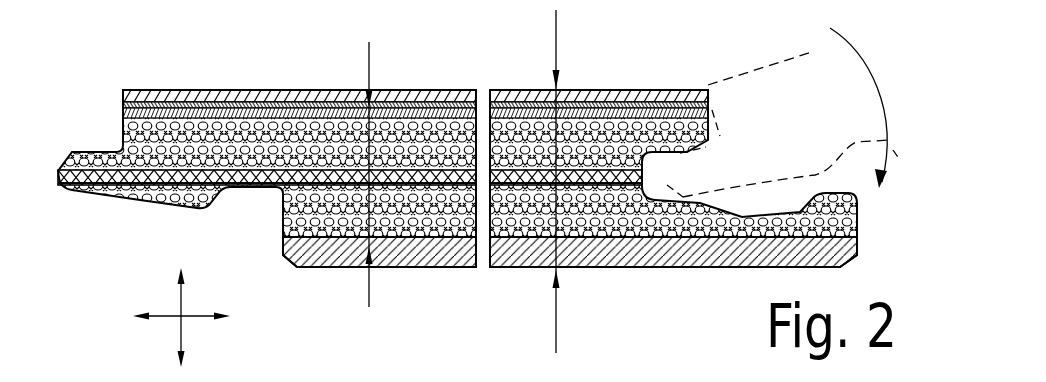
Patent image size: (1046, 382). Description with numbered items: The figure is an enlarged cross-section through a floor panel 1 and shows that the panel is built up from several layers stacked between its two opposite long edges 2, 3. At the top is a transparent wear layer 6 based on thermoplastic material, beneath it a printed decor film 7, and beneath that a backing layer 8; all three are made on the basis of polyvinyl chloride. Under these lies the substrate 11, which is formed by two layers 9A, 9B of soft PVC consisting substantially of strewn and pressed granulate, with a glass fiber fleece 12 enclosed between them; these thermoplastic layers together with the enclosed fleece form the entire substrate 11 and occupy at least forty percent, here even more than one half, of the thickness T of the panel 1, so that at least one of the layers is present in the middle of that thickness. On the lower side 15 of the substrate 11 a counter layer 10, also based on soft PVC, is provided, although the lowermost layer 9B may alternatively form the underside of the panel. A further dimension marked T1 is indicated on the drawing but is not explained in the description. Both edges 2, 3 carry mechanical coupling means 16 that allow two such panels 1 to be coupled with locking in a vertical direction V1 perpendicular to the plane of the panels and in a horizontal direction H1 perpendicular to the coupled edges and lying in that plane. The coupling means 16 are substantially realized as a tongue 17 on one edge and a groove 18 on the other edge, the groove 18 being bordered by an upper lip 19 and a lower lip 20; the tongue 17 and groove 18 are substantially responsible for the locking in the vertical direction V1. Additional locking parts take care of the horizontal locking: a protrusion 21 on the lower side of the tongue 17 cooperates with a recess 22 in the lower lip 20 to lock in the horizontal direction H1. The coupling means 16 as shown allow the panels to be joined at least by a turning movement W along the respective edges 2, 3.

The floor panel 1 is at (190, 234).
The edge 2 is at (94, 128).
The edge 3 is at (120, 119).
The wear layer 6 is at (250, 96).
The decor film 7 is at (355, 106).
The backing layer 8 is at (208, 114).
The layer of thermoplastic material 9A is at (398, 150).
The layer of thermoplastic material 9B is at (320, 208).
The counter layer 10 is at (410, 257).
The substrate 11 is at (340, 220).
The glass fiber fleece 12 is at (513, 268).
The lower side 15 is at (453, 237).
The coupling means 16 is at (88, 223).
The tongue 17 is at (82, 170).
The groove 18 is at (663, 167).
The upper lip 19 is at (607, 148).
The lower lip 20 is at (712, 218).
The protrusion 21 is at (790, 203).
The recess 22 is at (175, 208).
The thickness T is at (369, 52).
The total thickness T1 is at (556, 22).
The vertical direction V1 is at (183, 301).
The horizontal direction H1 is at (162, 322).
The turning movement W is at (880, 66).